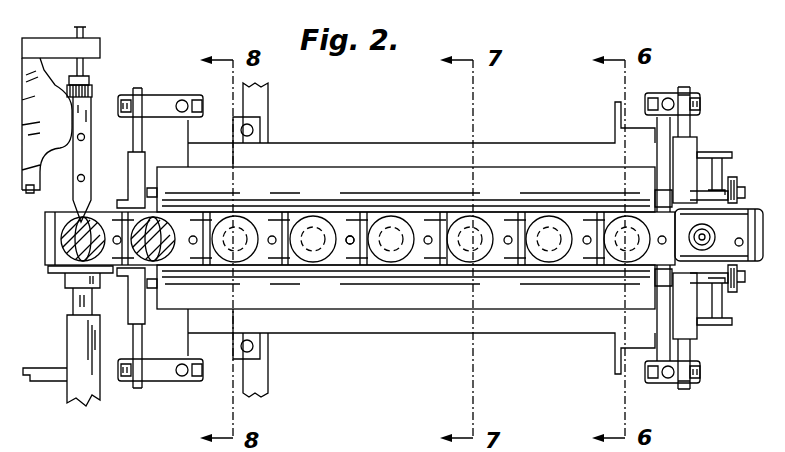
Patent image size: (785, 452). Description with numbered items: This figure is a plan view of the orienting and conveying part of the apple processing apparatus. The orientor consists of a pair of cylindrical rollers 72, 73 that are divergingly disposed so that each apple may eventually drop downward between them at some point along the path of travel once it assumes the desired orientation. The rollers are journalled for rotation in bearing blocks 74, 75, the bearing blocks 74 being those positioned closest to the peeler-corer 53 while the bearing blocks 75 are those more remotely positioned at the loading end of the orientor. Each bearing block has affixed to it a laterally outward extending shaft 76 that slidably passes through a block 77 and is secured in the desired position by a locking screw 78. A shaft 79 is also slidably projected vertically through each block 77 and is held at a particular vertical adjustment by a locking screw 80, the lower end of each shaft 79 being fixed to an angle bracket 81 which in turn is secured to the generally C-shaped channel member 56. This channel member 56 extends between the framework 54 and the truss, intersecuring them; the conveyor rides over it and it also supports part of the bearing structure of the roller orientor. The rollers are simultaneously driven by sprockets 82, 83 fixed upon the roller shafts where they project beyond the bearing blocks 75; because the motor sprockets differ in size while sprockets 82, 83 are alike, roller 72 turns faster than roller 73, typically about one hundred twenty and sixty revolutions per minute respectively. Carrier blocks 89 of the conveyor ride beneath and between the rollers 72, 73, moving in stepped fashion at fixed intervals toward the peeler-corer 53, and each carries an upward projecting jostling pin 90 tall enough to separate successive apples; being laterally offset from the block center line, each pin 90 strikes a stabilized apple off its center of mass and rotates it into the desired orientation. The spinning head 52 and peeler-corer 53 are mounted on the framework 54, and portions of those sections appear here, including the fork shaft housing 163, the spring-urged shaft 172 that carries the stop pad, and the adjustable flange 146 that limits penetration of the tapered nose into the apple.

The spinning head 52 is at (67, 345).
The peeler-corer 53 is at (54, 40).
The framework 54 is at (33, 383).
The C-shaped channel member 56 is at (368, 326).
The cylindrical roller 72 is at (335, 182).
The cylindrical roller 73 is at (505, 297).
The bearing block 74 is at (130, 180).
The bearing block 75 is at (690, 146).
The shaft 76 is at (138, 134).
The block 77 is at (158, 97).
The locking screw 78 is at (120, 105).
The shaft 79 is at (182, 100).
The locking screw 80 is at (203, 113).
The angle bracket 81 is at (192, 140).
The sprocket 82 is at (736, 180).
The sprocket 83 is at (736, 288).
The carrier block 89 is at (422, 218).
The jostling pin 90 is at (350, 245).
The adjustable flange 146 is at (65, 283).
The fork shaft housing 163 is at (92, 122).
The shaft 172 is at (86, 32).